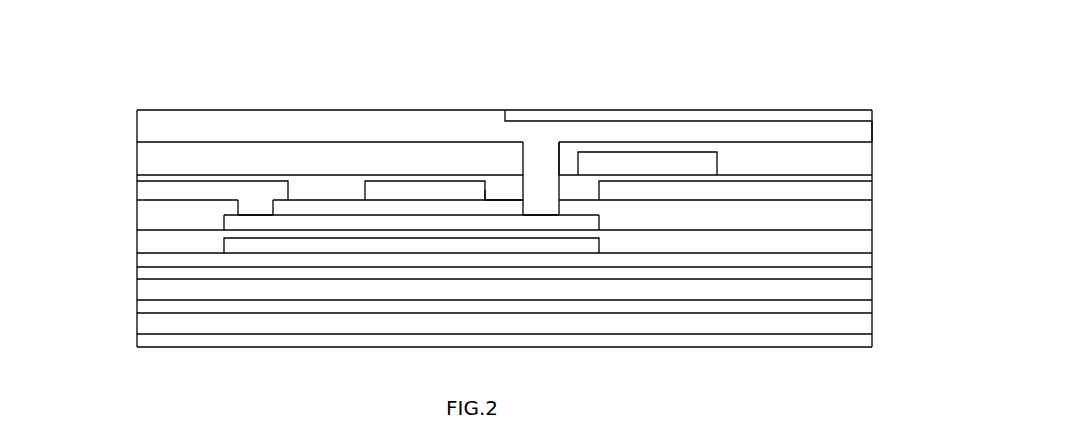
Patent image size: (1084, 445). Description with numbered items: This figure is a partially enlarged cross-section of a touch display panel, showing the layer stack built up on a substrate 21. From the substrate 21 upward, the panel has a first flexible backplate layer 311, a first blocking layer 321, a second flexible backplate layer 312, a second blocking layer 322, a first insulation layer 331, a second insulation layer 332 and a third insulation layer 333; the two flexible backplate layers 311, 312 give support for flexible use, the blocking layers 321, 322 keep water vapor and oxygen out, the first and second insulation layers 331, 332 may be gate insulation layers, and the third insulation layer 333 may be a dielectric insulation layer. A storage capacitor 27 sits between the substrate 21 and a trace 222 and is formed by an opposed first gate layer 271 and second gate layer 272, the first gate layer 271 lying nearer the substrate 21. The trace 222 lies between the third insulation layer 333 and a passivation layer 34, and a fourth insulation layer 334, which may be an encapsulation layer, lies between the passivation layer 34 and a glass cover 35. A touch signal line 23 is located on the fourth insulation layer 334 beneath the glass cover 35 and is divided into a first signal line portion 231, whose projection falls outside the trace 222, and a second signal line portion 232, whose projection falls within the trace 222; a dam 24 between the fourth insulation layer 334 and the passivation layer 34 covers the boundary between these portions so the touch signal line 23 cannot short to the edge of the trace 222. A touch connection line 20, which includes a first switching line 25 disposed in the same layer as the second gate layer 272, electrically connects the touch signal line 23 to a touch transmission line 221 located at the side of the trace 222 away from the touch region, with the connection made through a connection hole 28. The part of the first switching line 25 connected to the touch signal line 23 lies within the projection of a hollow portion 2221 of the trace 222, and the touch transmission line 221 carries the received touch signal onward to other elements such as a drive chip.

The touch connection line 20 is at (395, 200).
The substrate 21 is at (857, 340).
The touch signal line 23 is at (750, 106).
The dam 24 is at (694, 168).
The first switching line 25 is at (349, 222).
The storage capacitor 27 is at (411, 300).
The connection hole 28 is at (542, 163).
The passivation layer 34 is at (301, 193).
The glass cover 35 is at (162, 128).
The touch transmission line 221 is at (186, 190).
The trace 222 is at (435, 192).
The hollow portion 2221 is at (500, 192).
The first signal line portion 231 is at (587, 130).
The second signal line portion 232 is at (641, 130).
The first gate layer 271 is at (318, 247).
The second gate layer 272 is at (365, 222).
The first flexible backplate layer 311 is at (155, 323).
The second flexible backplate layer 312 is at (155, 290).
The first blocking layer 321 is at (857, 306).
The second blocking layer 322 is at (857, 272).
The first insulation layer 331 is at (155, 260).
The second insulation layer 332 is at (857, 245).
The third insulation layer 333 is at (857, 219).
The fourth insulation layer 334 is at (162, 158).